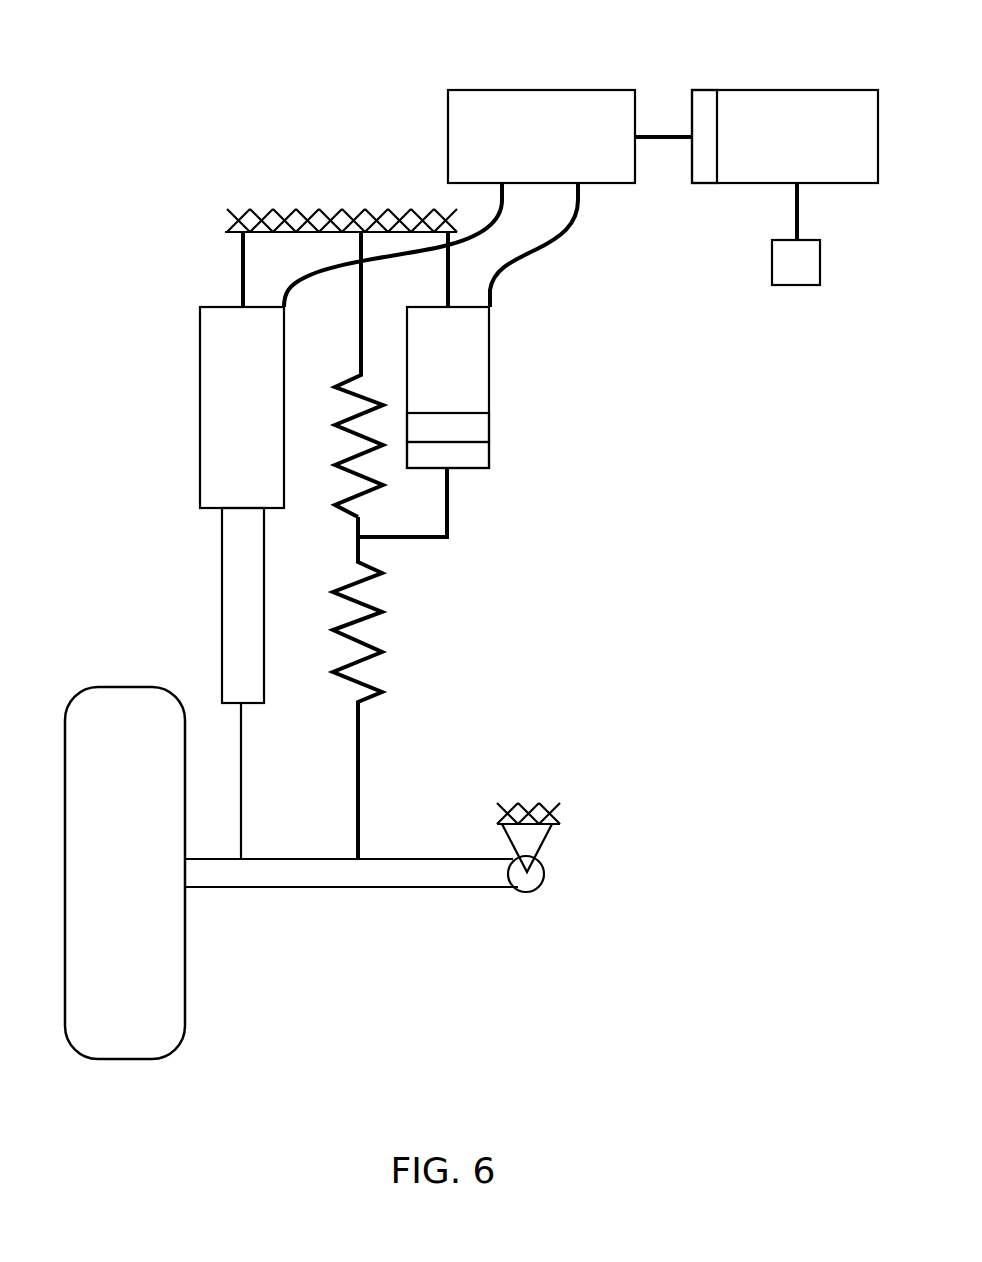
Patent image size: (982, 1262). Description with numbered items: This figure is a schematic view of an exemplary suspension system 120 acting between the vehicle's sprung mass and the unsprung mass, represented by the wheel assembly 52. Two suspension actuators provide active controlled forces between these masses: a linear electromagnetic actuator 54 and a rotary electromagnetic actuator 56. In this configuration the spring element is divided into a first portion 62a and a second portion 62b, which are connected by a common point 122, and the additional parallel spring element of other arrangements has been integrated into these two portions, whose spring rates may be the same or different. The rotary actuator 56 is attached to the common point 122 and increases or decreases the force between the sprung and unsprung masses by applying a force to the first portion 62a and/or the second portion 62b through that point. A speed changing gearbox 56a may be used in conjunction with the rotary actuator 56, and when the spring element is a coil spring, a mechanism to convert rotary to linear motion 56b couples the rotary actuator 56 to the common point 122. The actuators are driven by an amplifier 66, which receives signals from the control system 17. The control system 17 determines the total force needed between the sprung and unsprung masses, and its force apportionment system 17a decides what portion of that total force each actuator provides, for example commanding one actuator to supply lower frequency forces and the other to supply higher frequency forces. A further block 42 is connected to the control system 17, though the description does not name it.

The suspension system 120 is at (118, 160).
The amplifier 66 is at (532, 90).
The control system 17 is at (787, 90).
The force apportionment system 17a is at (705, 90).
The controller 42 is at (772, 262).
The linear electromagnetic actuator 54 is at (200, 387).
The rotary electromagnetic actuator 56 is at (490, 350).
The speed changing gearbox 56a is at (490, 425).
The mechanism to convert rotary to linear motion 56b is at (490, 459).
The first portion 62a is at (354, 414).
The second portion 62b is at (355, 580).
The common point 122 is at (360, 533).
The wheel assembly 52 is at (100, 687).